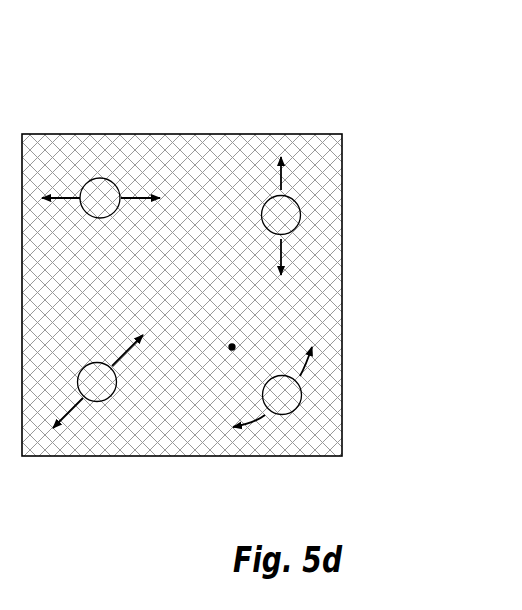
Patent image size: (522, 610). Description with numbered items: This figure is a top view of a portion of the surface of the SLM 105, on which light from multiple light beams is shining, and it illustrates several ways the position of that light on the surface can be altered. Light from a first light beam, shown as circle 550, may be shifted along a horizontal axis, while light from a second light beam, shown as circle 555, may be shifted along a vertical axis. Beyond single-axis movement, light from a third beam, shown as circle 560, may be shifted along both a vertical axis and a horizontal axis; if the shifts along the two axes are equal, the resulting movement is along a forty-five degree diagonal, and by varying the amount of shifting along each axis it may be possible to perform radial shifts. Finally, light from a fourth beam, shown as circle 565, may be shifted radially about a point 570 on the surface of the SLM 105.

The SLM 105 is at (62, 127).
The circle representing light from a first light beam 550 is at (113, 183).
The circle representing light from a second light beam 555 is at (268, 200).
The circle representing light from a third light beam 560 is at (101, 402).
The circle representing light from a fourth light beam 565 is at (273, 413).
The point 570 is at (232, 347).